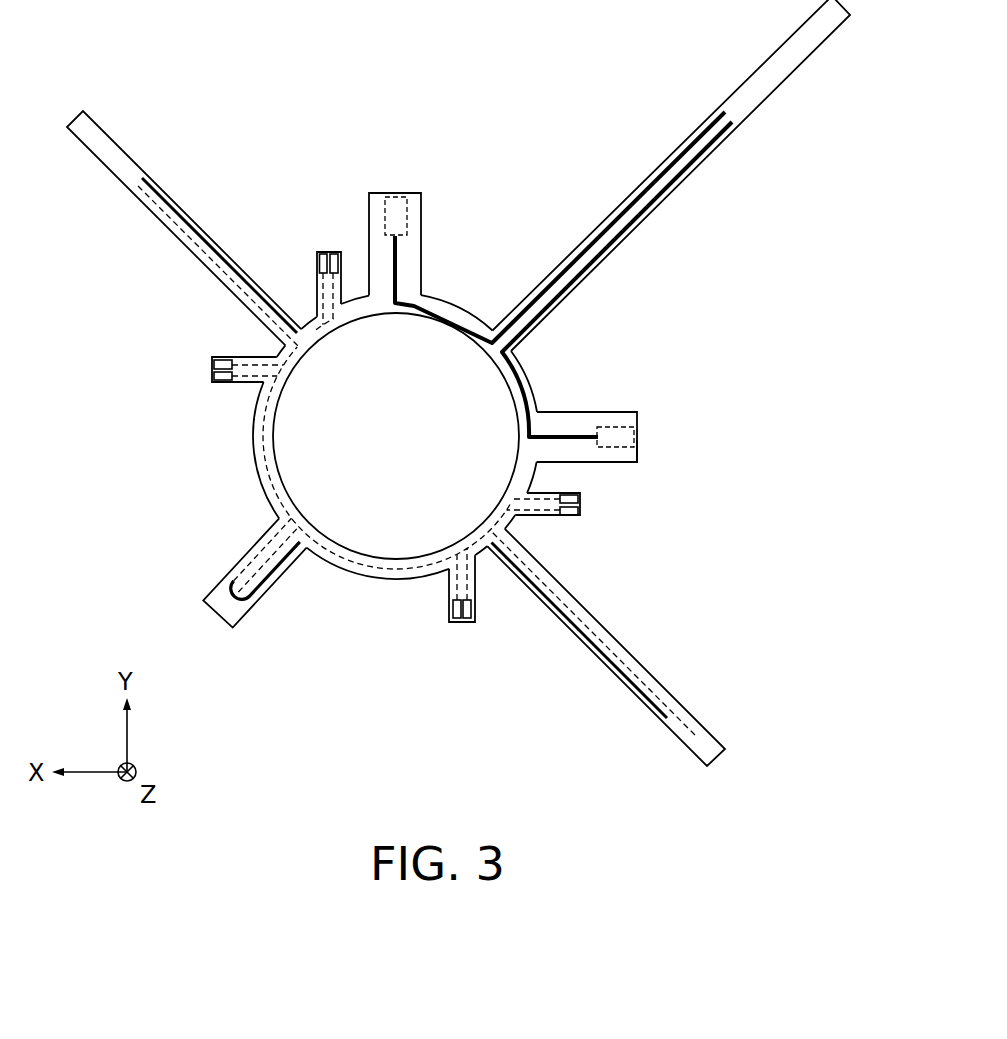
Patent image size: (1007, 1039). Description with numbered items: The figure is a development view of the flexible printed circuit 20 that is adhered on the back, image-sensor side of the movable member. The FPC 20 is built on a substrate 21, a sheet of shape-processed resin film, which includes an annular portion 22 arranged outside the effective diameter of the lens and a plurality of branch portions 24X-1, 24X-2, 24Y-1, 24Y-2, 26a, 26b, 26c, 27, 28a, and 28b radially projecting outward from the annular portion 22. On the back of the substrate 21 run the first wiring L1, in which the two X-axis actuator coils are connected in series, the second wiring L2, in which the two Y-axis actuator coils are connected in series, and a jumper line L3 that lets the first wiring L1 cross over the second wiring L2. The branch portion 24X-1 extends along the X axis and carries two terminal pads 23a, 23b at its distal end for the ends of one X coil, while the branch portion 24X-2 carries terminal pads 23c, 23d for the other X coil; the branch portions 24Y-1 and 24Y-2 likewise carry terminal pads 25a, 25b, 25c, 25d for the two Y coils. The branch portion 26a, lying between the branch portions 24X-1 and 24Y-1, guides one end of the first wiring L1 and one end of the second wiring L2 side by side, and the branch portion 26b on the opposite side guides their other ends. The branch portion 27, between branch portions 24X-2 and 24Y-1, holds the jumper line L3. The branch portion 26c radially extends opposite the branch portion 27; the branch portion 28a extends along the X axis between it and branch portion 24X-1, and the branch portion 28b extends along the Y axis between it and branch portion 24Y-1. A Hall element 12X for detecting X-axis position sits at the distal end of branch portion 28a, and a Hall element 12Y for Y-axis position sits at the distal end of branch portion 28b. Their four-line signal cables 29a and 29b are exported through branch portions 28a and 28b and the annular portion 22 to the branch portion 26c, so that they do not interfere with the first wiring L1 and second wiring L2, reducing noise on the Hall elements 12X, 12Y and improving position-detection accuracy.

The flexible printed circuit 20 is at (484, 207).
The substrate 21 is at (625, 412).
The annular portion 22 is at (533, 377).
The terminal pad 23a is at (582, 511).
The terminal pad 23b is at (582, 497).
The terminal pad 23c is at (222, 381).
The terminal pad 23d is at (213, 364).
The branch portion 24X-1 is at (552, 517).
The branch portion 24X-2 is at (235, 357).
The branch portion 24Y-1 is at (476, 590).
The branch portion 24Y-2 is at (316, 287).
The terminal pad 25a is at (465, 623).
The terminal pad 25b is at (455, 623).
The terminal pad 25c is at (334, 253).
The terminal pad 25d is at (322, 253).
The branch portion 26a is at (711, 754).
The branch portion 26b is at (115, 141).
The branch portion 26c is at (793, 55).
The branch portion 27 is at (237, 628).
The branch portion 28a is at (638, 455).
The branch portion 28b is at (380, 192).
The signal cable 29a is at (645, 208).
The signal cable 29b is at (637, 196).
The Hall element 12X is at (637, 435).
The Hall element 12Y is at (400, 196).
The first wiring L1 is at (255, 468).
The second wiring L2 is at (383, 580).
The jumper line L3 is at (230, 598).